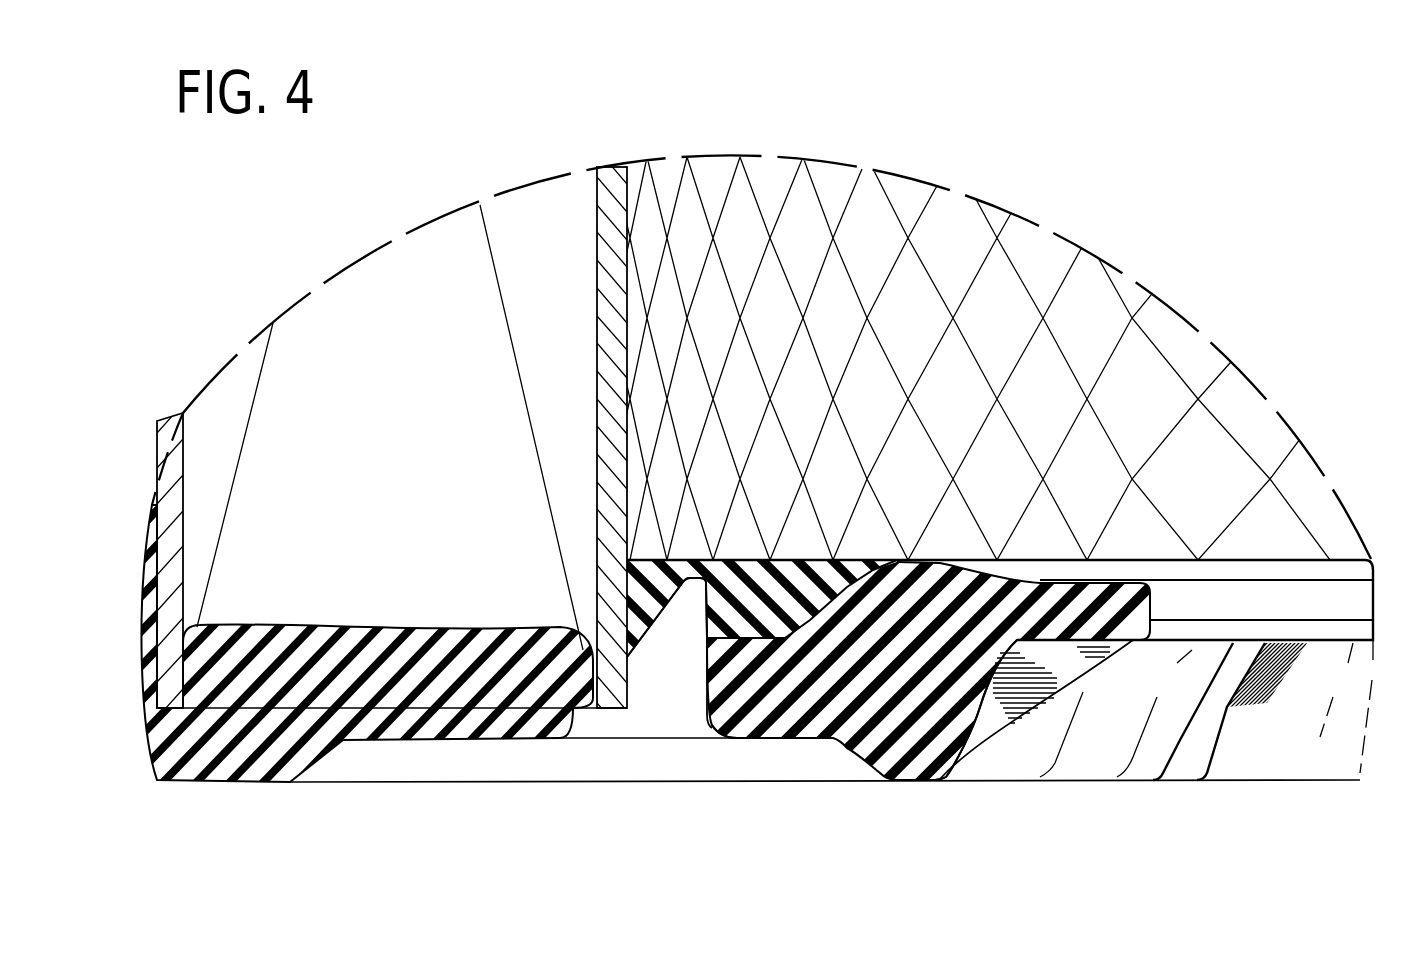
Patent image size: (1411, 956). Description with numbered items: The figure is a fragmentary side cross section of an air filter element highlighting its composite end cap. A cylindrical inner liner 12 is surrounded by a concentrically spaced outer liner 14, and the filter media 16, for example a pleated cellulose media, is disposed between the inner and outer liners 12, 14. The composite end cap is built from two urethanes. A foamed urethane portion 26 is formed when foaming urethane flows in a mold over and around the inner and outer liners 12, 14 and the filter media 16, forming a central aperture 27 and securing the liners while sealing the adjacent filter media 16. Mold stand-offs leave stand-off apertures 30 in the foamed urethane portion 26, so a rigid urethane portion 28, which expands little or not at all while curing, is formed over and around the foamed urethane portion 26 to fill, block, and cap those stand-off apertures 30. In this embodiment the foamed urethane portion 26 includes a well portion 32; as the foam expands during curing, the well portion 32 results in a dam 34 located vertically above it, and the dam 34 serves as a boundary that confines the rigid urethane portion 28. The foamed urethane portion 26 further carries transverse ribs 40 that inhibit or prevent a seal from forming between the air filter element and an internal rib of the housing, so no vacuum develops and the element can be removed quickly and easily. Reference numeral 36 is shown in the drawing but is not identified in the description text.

The inner liner 12 is at (613, 185).
The outer liner 14 is at (173, 510).
The filter media 16 is at (357, 302).
The foamed urethane portion 26 is at (778, 727).
The central aperture 27 is at (1202, 627).
The rigid urethane portion 28 is at (730, 597).
The stand-off apertures 30 is at (647, 722).
The well portion 32 is at (917, 752).
The dam 34 is at (898, 583).
The mesh 36 is at (627, 337).
The transverse ribs 40 is at (1050, 703).